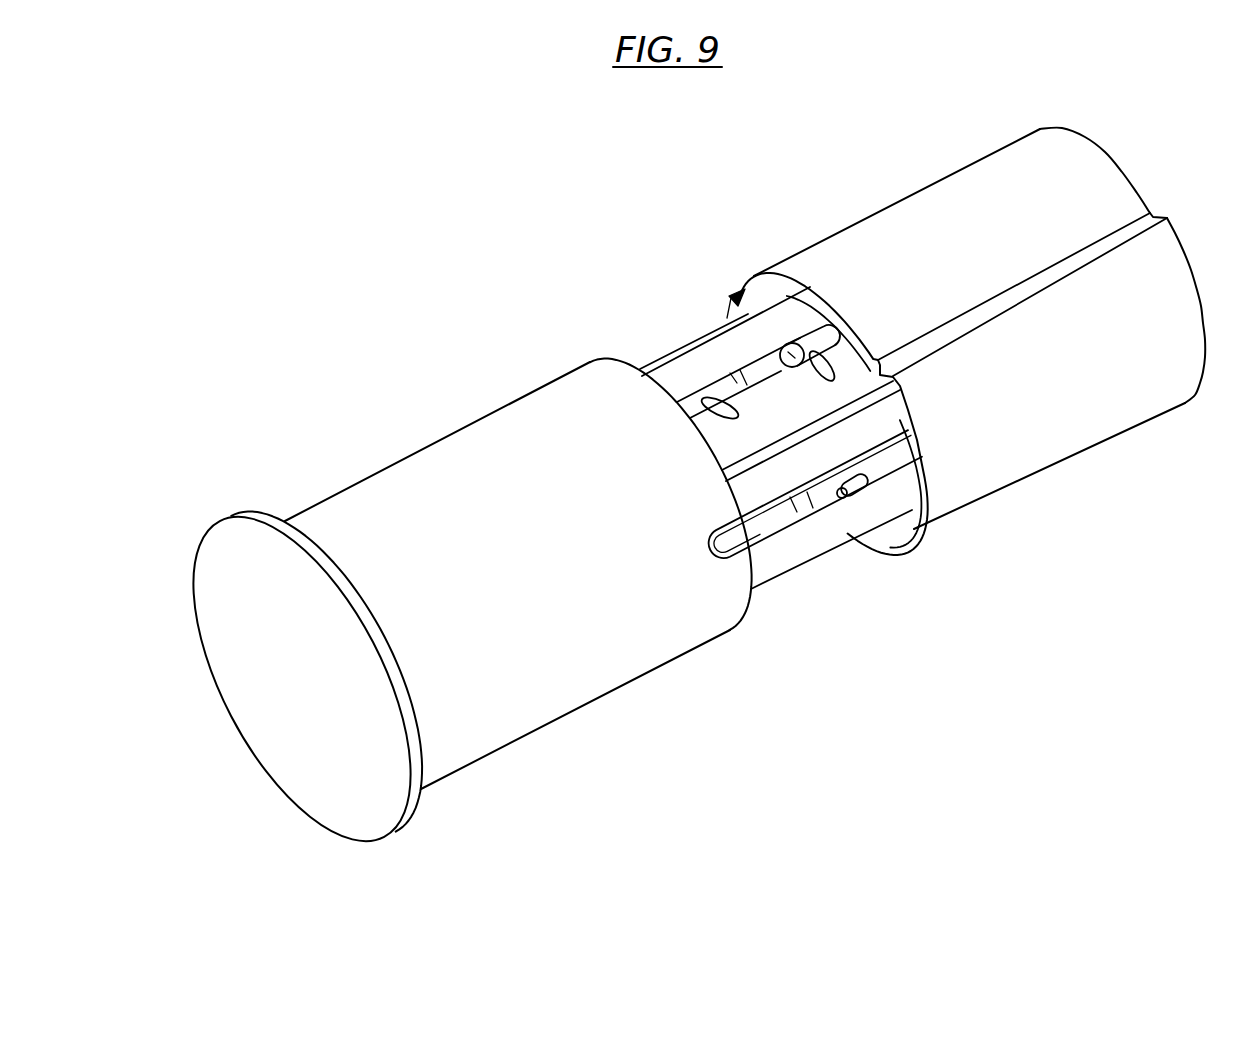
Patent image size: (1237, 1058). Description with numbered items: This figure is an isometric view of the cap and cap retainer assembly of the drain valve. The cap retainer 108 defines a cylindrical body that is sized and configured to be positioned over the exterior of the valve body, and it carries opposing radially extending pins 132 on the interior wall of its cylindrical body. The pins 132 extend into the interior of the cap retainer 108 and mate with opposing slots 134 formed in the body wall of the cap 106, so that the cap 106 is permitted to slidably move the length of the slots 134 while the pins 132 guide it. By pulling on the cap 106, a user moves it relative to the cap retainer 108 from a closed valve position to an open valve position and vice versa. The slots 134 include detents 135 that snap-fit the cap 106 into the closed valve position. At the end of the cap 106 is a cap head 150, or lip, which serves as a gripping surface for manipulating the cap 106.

The cap 106 is at (527, 703).
The cap retainer 108 is at (1010, 467).
The pins 132 is at (810, 337).
The slots 134 is at (733, 420).
The detents 135 is at (867, 490).
The cap head 150 is at (320, 753).